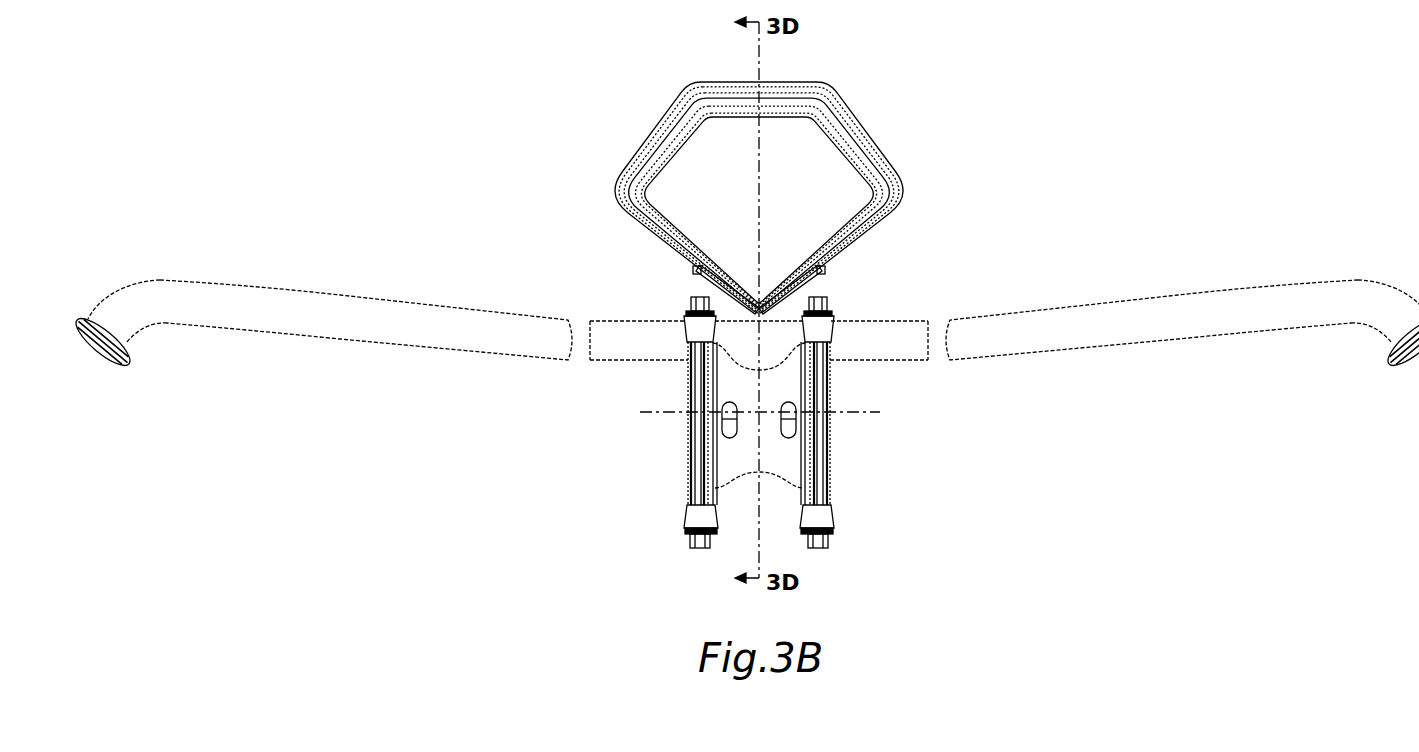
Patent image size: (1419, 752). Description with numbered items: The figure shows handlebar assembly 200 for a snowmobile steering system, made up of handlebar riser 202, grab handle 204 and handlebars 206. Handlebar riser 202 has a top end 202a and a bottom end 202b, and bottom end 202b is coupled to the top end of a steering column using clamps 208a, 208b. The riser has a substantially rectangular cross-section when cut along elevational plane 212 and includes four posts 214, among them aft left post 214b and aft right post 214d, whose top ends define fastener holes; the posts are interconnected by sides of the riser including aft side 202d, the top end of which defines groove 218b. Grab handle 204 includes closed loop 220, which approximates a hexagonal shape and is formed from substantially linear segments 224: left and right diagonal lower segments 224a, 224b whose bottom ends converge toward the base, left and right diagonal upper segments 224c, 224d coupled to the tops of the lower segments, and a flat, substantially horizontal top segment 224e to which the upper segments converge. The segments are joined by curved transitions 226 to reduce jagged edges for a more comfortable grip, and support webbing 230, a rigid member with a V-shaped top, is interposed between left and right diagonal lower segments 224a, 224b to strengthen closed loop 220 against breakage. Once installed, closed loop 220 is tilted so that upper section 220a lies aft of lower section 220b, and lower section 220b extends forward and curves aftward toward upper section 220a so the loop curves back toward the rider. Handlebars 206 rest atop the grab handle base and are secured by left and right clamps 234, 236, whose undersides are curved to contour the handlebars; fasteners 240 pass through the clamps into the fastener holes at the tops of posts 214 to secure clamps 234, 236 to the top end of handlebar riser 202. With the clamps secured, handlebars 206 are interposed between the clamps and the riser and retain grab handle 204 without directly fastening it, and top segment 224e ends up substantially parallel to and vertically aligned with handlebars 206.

The handlebar assembly 200 is at (494, 126).
The handlebar riser 202 is at (690, 423).
The top end 202a is at (827, 358).
The bottom end 202b is at (831, 491).
The aft side 202d is at (784, 478).
The grab handle 204 is at (890, 148).
The handlebars 206 is at (157, 286).
The clamp 208a is at (694, 521).
The clamp 208b is at (825, 521).
The elevational plane 212 is at (862, 415).
The posts 214 is at (690, 490).
The aft left post 214b is at (690, 458).
The aft right post 214d is at (831, 464).
The groove 218b is at (724, 354).
The closed loop 220 is at (912, 204).
The upper section 220a is at (684, 90).
The lower section 220b is at (873, 271).
The linear segments 224 is at (836, 90).
The left diagonal lower segment 224a is at (635, 257).
The right diagonal lower segment 224b is at (883, 257).
The left diagonal upper segment 224c is at (648, 130).
The right diagonal upper segment 224d is at (870, 124).
The top segment 224e is at (735, 80).
The curved transitions 226 is at (610, 198).
The support webbing 230 is at (800, 288).
The left clamp 234 is at (692, 323).
The right clamp 236 is at (826, 323).
The fasteners 240 is at (701, 295).